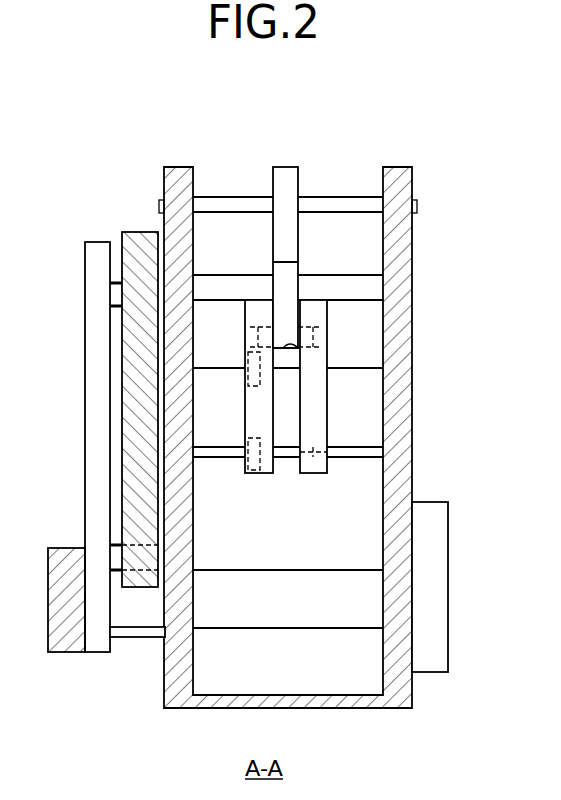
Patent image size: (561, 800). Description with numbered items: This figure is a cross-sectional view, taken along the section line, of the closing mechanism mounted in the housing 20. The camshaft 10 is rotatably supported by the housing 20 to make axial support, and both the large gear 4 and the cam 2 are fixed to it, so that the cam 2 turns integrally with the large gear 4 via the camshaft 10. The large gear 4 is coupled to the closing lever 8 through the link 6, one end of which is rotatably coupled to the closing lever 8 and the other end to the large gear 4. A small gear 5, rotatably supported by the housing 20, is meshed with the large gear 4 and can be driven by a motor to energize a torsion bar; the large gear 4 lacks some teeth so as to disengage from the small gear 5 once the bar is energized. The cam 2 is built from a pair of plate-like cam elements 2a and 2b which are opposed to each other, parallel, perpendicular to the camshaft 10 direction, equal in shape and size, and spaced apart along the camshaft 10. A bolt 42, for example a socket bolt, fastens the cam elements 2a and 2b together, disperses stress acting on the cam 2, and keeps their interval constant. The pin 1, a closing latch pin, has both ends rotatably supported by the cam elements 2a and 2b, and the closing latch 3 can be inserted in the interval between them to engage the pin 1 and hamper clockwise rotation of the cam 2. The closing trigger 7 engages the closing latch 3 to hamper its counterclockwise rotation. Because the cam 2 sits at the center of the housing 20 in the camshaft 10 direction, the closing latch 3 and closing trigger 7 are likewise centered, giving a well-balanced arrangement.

The pin 1 is at (285, 348).
The cam 2 is at (363, 435).
The cam element 2a is at (260, 474).
The cam element 2b is at (313, 417).
The closing latch 3 is at (287, 262).
The large gear 4 is at (126, 232).
The small gear 5 is at (138, 638).
The link 6 is at (84, 268).
The closing trigger 7 is at (287, 165).
The closing lever 8 is at (66, 653).
The camshaft 10 is at (370, 402).
The housing 20 is at (395, 165).
The bolt 42 is at (250, 468).